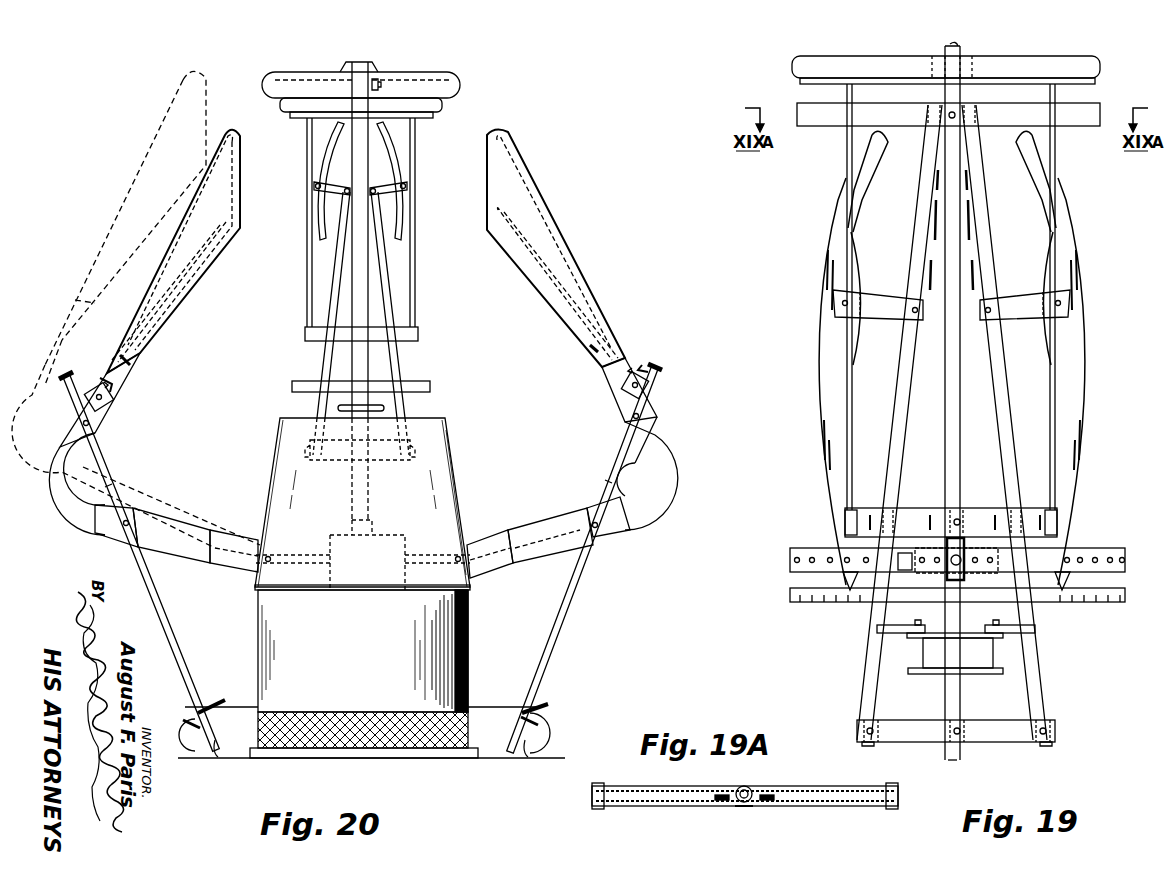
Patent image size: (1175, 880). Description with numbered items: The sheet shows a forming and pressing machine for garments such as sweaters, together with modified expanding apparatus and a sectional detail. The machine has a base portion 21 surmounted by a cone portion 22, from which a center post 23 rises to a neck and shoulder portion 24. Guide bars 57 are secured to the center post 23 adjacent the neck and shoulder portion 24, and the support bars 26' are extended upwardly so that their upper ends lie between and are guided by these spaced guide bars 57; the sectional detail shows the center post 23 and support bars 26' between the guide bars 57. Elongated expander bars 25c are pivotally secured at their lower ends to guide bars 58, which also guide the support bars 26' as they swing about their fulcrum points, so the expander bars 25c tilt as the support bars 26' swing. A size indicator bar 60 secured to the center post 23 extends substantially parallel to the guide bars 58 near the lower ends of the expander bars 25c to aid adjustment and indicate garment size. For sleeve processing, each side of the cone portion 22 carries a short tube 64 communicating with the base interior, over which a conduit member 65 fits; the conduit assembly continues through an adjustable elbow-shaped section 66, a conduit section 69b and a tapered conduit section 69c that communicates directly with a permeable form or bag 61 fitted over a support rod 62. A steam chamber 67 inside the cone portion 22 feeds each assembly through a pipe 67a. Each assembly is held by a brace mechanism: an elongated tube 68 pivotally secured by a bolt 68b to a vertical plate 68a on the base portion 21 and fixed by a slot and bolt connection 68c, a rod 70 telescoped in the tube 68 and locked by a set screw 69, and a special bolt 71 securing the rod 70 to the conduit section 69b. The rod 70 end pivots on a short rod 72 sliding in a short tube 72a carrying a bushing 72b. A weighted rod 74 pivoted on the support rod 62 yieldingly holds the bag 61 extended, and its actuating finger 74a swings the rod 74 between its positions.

In FIG. 20, the base portion 21 is at (470, 640).
In FIG. 20, the cone portion 22 is at (450, 440).
In FIG. 19A, the center post 23 is at (748, 806).
In FIG. 19, the center post 23 is at (960, 432).
In FIG. 19, the neck and shoulder portion 24 is at (1106, 66).
In FIG. 19, the expander bar 25c is at (828, 222).
In FIG. 19A, the support bar 26' is at (751, 813).
In FIG. 19, the support bar 26' is at (952, 422).
In FIG. 19A, the guide bar 57 is at (915, 790).
In FIG. 19, the guide bar 57 is at (1080, 126).
In FIG. 19, the guide bar 58 is at (1098, 548).
In FIG. 19, the size indicator bar 60 is at (860, 604).
In FIG. 20, the permeable form or bag 61 is at (240, 218).
In FIG. 20, the support member or rod 62 is at (240, 172).
In FIG. 20, the short tube 64 is at (240, 540).
In FIG. 20, the conduit member 65 is at (510, 563).
In FIG. 20, the elbow-shaped section 66 is at (678, 475).
In FIG. 20, the steam chamber 67 is at (398, 535).
In FIG. 20, the pipe 67a is at (312, 550).
In FIG. 20, the elongated tube 68 is at (585, 572).
In FIG. 20, the vertical plate 68a is at (552, 718).
In FIG. 20, the bolt 68b is at (525, 755).
In FIG. 20, the slot and bolt connection 68c is at (195, 752).
In FIG. 20, the set screw 69 is at (618, 538).
In FIG. 20, the conduit section 69b is at (660, 437).
In FIG. 20, the tapered conduit section 69c is at (110, 395).
In FIG. 20, the rod 70 is at (610, 456).
In FIG. 20, the special bolt 71 is at (648, 410).
In FIG. 20, the short rod 72 is at (640, 370).
In FIG. 20, the short tube 72a is at (628, 362).
In FIG. 20, the bushing 72b is at (615, 378).
In FIG. 20, the weighted rod 74 is at (200, 290).
In FIG. 20, the actuating finger 74a is at (140, 360).